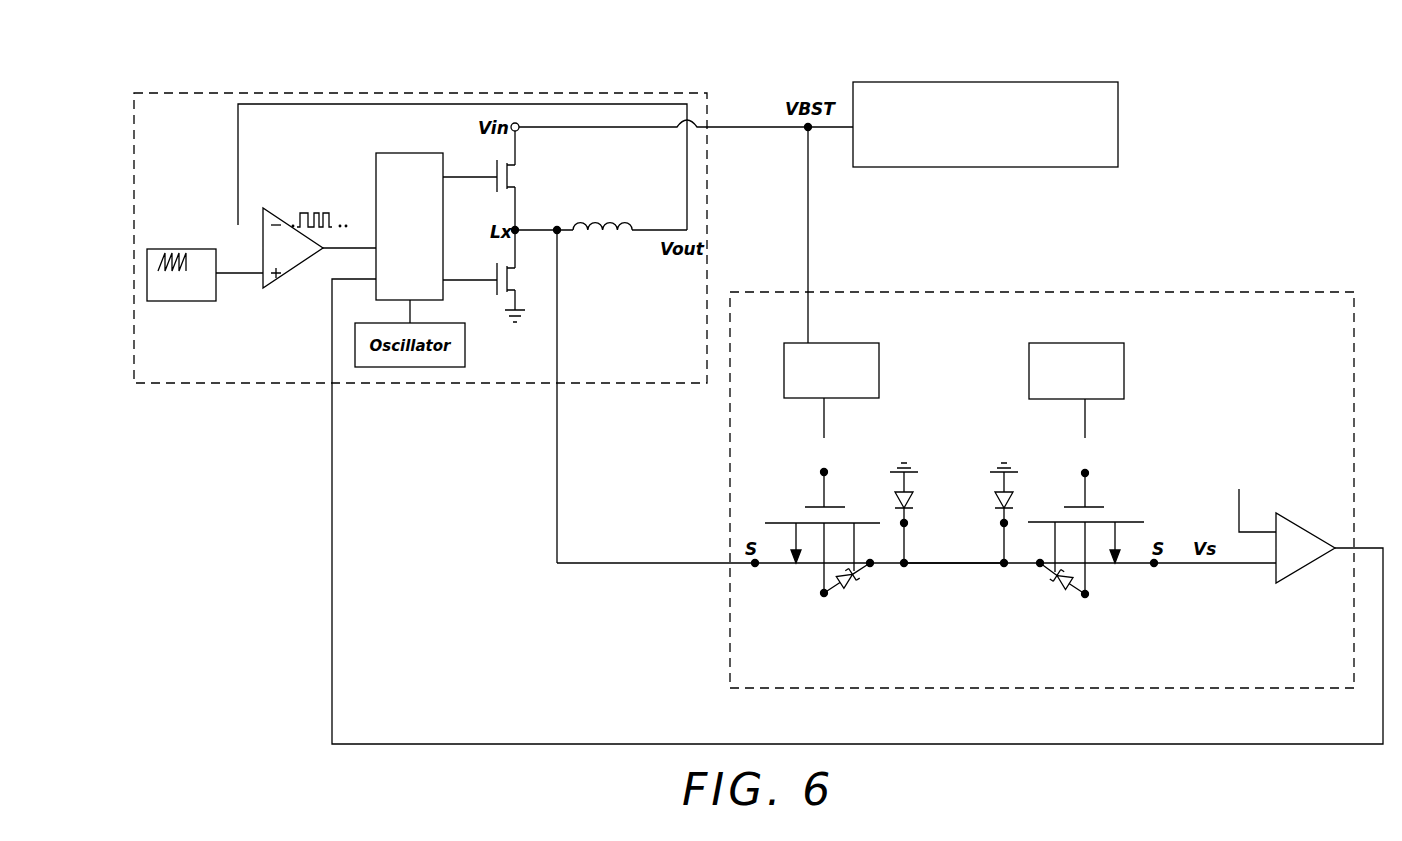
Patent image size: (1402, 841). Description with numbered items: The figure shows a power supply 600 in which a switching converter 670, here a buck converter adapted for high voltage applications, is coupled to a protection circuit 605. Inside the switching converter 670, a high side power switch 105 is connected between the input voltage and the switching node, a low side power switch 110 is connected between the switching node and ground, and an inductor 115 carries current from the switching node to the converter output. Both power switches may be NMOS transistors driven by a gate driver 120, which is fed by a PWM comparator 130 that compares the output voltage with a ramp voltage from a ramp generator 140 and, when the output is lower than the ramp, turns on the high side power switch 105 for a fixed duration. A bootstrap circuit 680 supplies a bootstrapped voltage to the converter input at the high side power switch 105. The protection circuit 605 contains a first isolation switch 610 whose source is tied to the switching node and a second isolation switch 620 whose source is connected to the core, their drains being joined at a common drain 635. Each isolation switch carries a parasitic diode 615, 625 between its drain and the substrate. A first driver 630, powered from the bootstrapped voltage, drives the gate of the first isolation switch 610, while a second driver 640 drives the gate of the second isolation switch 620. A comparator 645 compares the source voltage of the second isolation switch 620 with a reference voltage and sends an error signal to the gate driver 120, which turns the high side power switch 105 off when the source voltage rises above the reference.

The power supply 600 is at (256, 73).
The switching converter 670 is at (618, 93).
The protection circuit 605 is at (946, 291).
The bootstrap circuit 680 is at (1062, 82).
The ramp generator 140 is at (175, 249).
The PWM comparator 130 is at (281, 201).
The gate driver 120 is at (409, 226).
The high side power switch 105 is at (512, 177).
The low side power switch 110 is at (512, 280).
The inductor 115 is at (601, 216).
The first driver 630 is at (877, 397).
The second driver 640 is at (1122, 397).
The first isolation switch 610 is at (900, 623).
The second isolation switch 620 is at (1159, 623).
The parasitic diode 615 is at (886, 498).
The parasitic diode 625 is at (986, 498).
The common drain 635 is at (960, 566).
The comparator 645 is at (1312, 532).